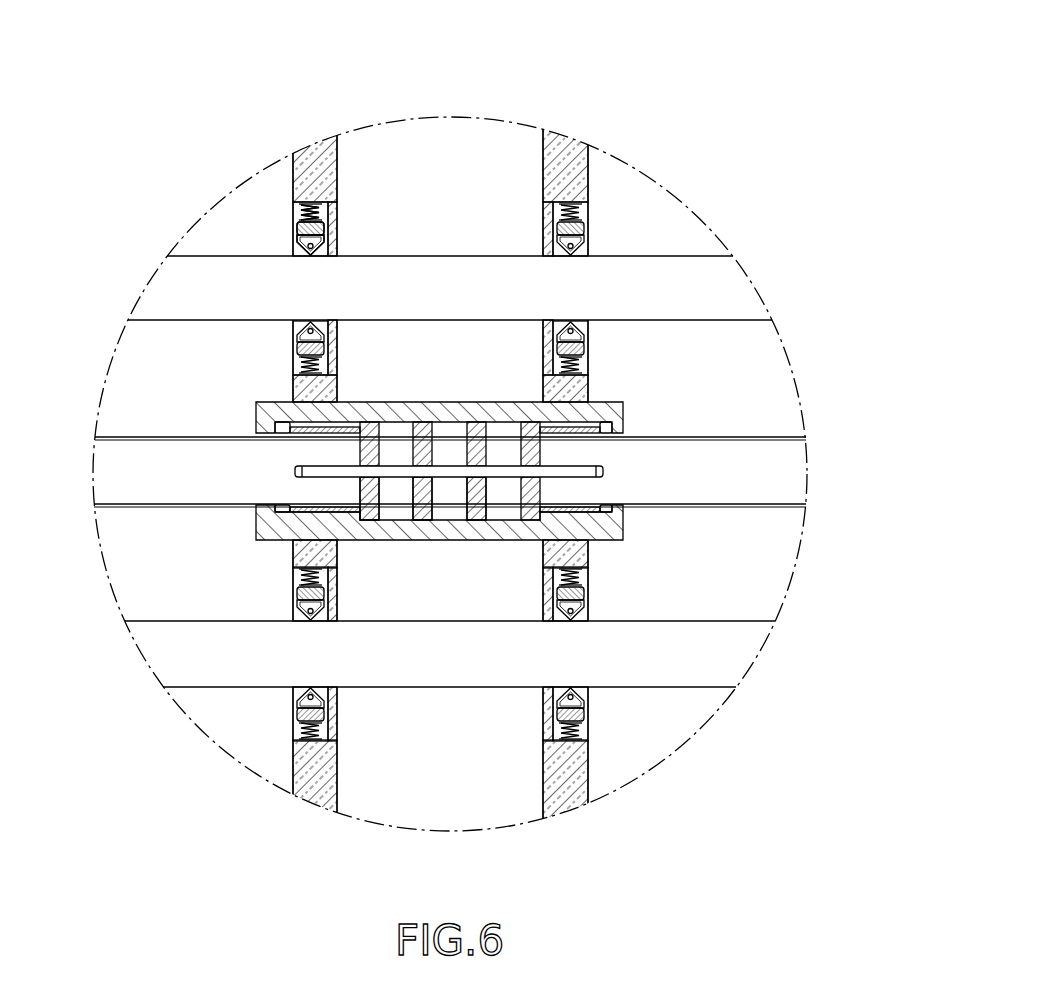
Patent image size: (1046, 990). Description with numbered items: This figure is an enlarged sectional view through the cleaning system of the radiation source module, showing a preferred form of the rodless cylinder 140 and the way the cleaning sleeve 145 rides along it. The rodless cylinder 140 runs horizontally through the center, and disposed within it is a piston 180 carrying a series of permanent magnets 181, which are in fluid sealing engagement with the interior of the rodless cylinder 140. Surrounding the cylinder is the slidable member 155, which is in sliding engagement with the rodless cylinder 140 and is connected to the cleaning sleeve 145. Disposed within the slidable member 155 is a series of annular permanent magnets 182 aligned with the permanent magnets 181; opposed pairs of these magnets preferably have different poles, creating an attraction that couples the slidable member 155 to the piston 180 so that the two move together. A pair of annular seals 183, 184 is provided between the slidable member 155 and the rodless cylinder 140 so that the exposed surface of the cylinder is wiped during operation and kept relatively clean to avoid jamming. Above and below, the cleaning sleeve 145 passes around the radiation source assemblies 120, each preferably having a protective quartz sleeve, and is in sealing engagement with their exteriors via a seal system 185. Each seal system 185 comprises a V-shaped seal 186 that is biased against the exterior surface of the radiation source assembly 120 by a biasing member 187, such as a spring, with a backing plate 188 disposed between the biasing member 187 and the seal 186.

The radiation source assembly 120 is at (675, 257).
The rodless cylinder 140 is at (760, 510).
The cleaning sleeve 145 is at (570, 145).
The slidable member 155 is at (403, 407).
The piston 180 is at (577, 468).
The permanent magnet 181 is at (413, 492).
The annular permanent magnet 182 is at (422, 521).
The annular seal 183 is at (282, 428).
The annular seal 184 is at (624, 512).
The seal system 185 is at (286, 212).
The V-shaped seal 186 is at (293, 241).
The biasing member 187 is at (322, 205).
The backing plate 188 is at (293, 227).